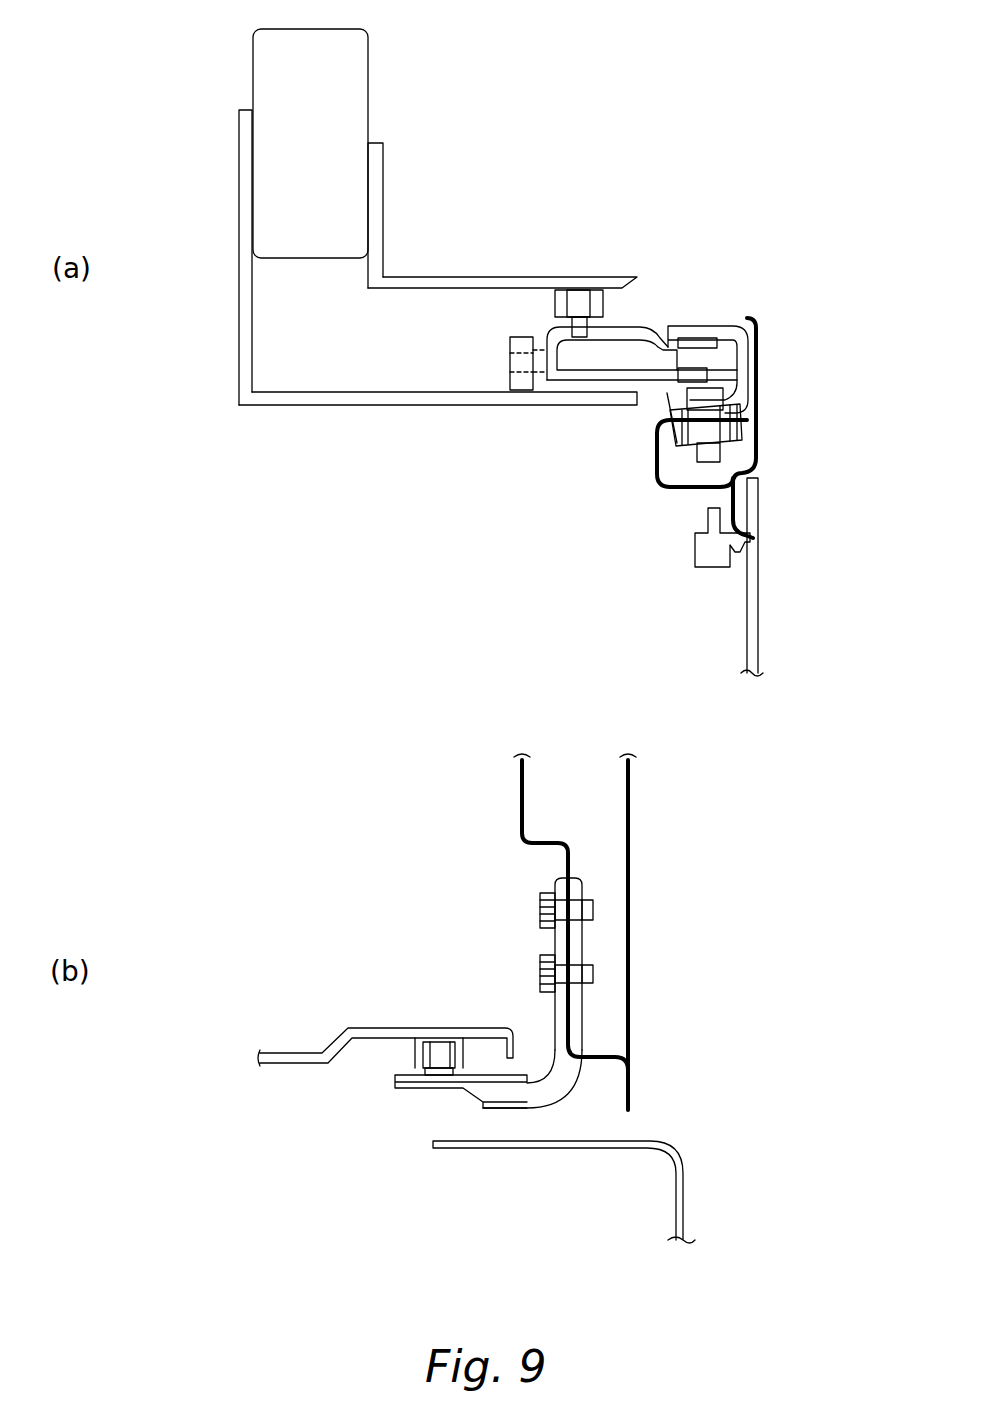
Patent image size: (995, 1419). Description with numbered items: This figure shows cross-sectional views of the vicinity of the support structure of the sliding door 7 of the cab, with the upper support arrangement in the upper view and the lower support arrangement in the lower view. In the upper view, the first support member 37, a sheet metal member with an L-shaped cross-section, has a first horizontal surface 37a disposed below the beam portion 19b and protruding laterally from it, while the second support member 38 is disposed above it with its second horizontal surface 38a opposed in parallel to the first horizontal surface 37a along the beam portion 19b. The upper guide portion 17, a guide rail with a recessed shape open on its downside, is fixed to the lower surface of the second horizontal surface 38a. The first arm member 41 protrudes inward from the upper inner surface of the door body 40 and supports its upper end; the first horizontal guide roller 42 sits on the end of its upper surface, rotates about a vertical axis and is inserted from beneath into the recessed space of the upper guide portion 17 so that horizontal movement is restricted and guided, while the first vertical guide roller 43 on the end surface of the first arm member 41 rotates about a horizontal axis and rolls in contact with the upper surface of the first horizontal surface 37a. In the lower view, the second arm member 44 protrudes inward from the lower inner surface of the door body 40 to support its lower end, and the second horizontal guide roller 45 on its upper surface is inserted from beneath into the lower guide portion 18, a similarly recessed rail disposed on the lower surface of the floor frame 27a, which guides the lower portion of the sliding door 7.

The sliding door 7 is at (785, 413).
The upper guide portion 17 is at (603, 300).
The lower guide portion 18 is at (465, 1062).
The beam portion 19b is at (370, 95).
The floor frame 27a is at (375, 1028).
The first support member 37 is at (393, 418).
The first horizontal surface 37a is at (430, 398).
The second support member 38 is at (450, 257).
The second horizontal surface 38a is at (510, 275).
The door body 40 is at (755, 612).
The first arm member 41 is at (652, 332).
The first horizontal guide roller 42 is at (580, 302).
The first vertical guide roller 43 is at (518, 378).
The second arm member 44 is at (548, 1098).
The second horizontal guide roller 45 is at (438, 1052).